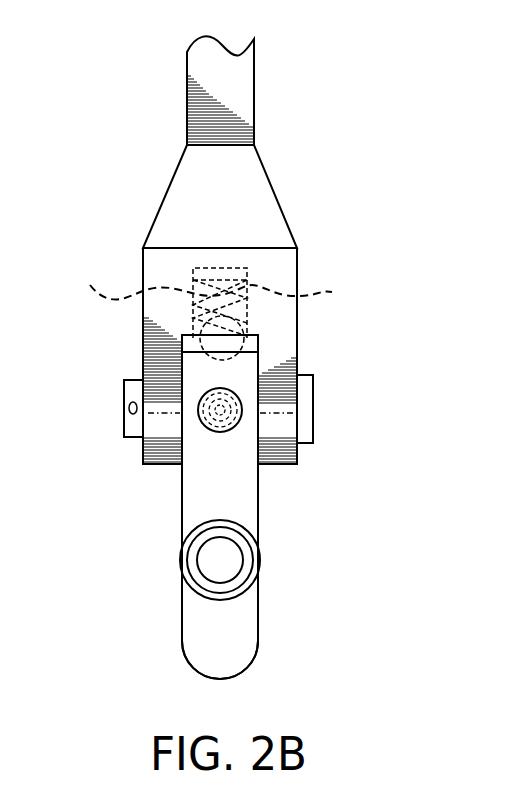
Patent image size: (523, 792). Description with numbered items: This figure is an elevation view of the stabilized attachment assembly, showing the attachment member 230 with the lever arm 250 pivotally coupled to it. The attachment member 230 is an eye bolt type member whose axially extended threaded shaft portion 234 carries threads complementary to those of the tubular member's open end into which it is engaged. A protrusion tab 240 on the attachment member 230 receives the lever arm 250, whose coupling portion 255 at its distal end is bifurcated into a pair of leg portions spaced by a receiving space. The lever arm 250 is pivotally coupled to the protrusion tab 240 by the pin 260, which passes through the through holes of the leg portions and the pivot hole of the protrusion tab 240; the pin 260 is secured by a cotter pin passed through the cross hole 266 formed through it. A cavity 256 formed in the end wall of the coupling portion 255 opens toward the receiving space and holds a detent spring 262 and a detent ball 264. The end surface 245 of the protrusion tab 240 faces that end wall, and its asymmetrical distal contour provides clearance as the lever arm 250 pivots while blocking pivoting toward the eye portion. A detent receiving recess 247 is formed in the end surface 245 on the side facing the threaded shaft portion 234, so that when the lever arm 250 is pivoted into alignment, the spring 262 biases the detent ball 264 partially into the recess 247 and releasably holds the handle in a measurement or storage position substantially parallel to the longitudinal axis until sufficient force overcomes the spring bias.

The attachment member 230 is at (260, 638).
The threaded shaft portion 234 is at (260, 572).
The protrusion tab 240 is at (260, 512).
The end surface 245 is at (227, 459).
The detent receiving recess 247 is at (241, 395).
The lever arm 250 is at (254, 97).
The coupling portion 255 is at (275, 193).
The cavity 256 is at (190, 281).
The pin 260 is at (312, 405).
The detent spring 262 is at (284, 303).
The detent ball 264 is at (237, 347).
The cross hole 266 is at (129, 407).